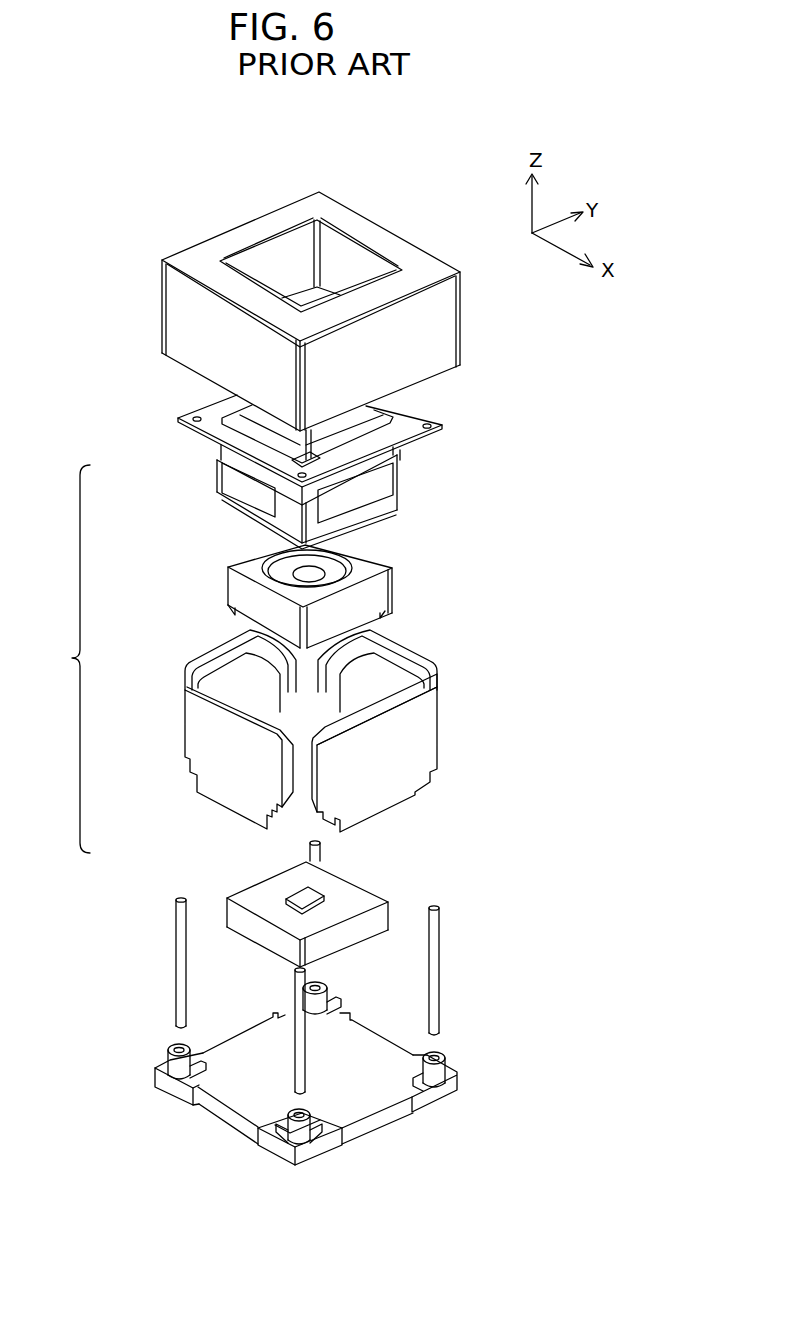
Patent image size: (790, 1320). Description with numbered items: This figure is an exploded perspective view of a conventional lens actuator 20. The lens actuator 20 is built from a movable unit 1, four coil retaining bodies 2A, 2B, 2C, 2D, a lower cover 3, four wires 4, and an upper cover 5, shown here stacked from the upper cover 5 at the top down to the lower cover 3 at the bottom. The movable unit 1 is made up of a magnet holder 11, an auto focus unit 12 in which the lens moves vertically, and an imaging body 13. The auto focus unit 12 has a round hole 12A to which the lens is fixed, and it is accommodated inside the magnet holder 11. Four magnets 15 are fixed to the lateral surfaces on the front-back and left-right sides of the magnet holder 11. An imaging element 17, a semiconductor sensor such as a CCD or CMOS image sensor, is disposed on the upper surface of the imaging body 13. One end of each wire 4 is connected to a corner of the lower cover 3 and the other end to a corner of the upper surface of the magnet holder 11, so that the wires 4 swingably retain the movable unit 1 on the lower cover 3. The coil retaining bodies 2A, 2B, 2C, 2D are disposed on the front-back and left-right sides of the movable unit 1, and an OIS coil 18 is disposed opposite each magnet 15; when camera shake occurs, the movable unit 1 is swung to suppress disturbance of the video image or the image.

The lens actuator 20 is at (366, 200).
The upper cover 5 is at (176, 328).
The magnet holder 11 is at (218, 432).
The magnet 15 is at (380, 492).
The auto focus unit 12 is at (233, 595).
The round hole 12A is at (310, 572).
The coil retaining body 2A is at (393, 777).
The coil retaining body 2B is at (387, 644).
The coil retaining body 2C is at (190, 657).
The coil retaining body 2D is at (195, 739).
The OIS coil 18 is at (347, 695).
The imaging body 13 is at (228, 895).
The imaging element 17 is at (313, 898).
The wire 4 is at (295, 1043).
The lower cover 3 is at (235, 1088).
The movable unit 1 is at (71, 659).